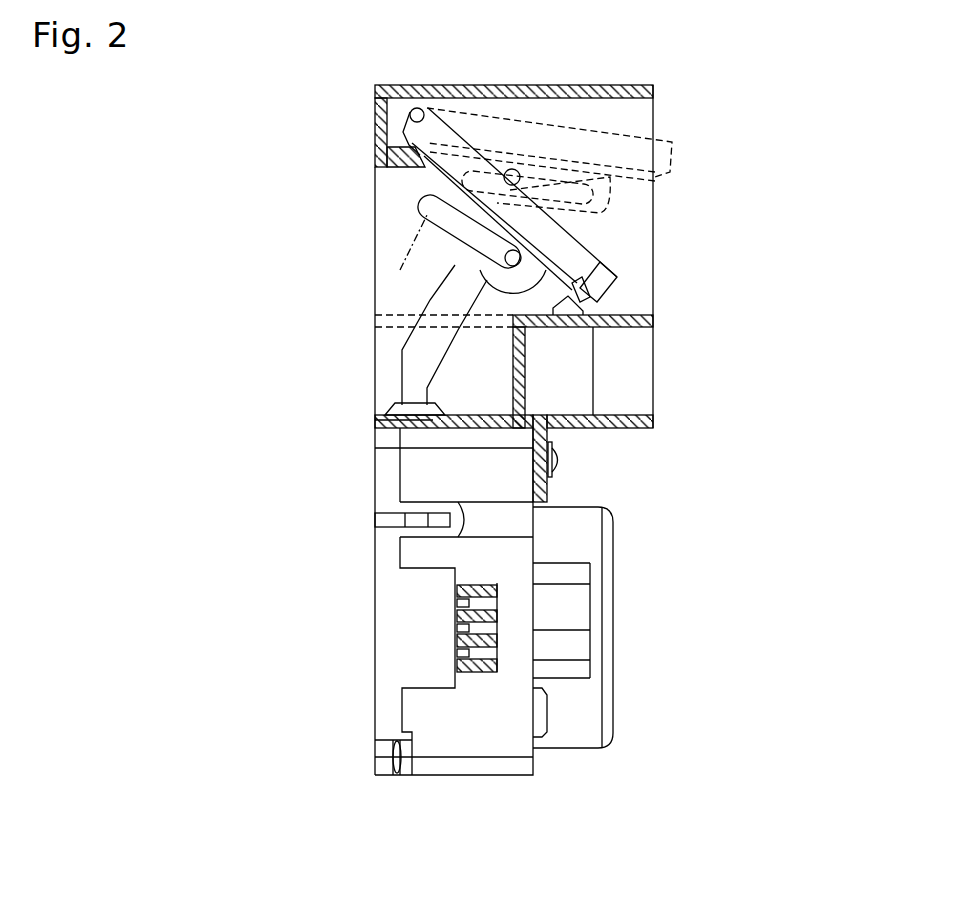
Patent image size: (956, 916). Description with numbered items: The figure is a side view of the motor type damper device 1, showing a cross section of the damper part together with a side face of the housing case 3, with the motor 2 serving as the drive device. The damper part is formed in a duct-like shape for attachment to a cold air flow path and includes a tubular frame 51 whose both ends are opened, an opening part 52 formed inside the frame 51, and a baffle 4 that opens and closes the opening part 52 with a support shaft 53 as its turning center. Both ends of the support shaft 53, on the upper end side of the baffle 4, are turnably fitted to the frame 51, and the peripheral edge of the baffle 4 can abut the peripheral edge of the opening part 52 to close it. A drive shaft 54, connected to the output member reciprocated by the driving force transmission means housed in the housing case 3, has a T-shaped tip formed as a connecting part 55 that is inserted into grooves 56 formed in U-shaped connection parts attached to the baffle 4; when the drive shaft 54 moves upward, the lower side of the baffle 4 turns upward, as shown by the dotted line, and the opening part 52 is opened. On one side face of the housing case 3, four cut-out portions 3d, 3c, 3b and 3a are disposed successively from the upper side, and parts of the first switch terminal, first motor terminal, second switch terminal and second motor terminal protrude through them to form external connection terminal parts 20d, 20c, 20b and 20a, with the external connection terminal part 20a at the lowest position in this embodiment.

The motor type damper device 1 is at (724, 329).
The motor 2 is at (612, 512).
The housing case 3 is at (377, 552).
The cut-out portion 3a is at (465, 677).
The cut-out portion 3b is at (465, 645).
The cut-out portion 3c is at (463, 623).
The cut-out portion 3d is at (460, 605).
The baffle 4 is at (582, 273).
The external connection terminal part 20a is at (497, 658).
The external connection terminal part 20b is at (497, 633).
The external connection terminal part 20c is at (497, 610).
The external connection terminal part 20d is at (497, 585).
The frame 51 is at (395, 148).
The opening part 52 is at (420, 163).
The support shaft 53 is at (410, 117).
The drive shaft 54 is at (410, 367).
The connecting part 55 is at (505, 258).
The grooves 56 is at (445, 197).